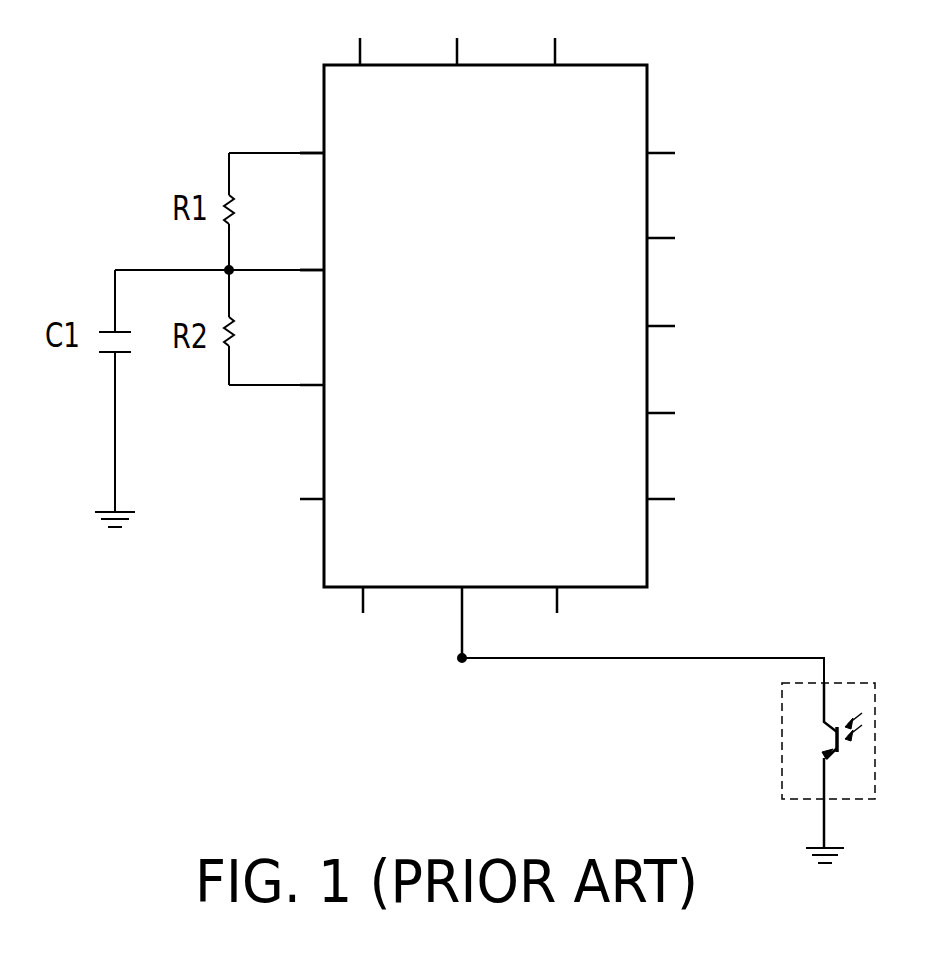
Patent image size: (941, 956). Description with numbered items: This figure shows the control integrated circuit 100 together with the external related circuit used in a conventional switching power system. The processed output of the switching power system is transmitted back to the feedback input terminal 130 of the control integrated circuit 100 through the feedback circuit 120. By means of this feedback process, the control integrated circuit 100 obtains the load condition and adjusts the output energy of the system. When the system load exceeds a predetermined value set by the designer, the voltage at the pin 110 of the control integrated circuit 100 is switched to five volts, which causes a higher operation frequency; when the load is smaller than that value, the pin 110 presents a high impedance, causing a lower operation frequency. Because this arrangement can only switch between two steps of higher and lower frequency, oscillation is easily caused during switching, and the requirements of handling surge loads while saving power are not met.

The control integrated circuit 100 is at (610, 112).
The pin 110 is at (315, 390).
The feedback circuit 120 is at (852, 683).
The feedback input terminal 130 is at (454, 593).